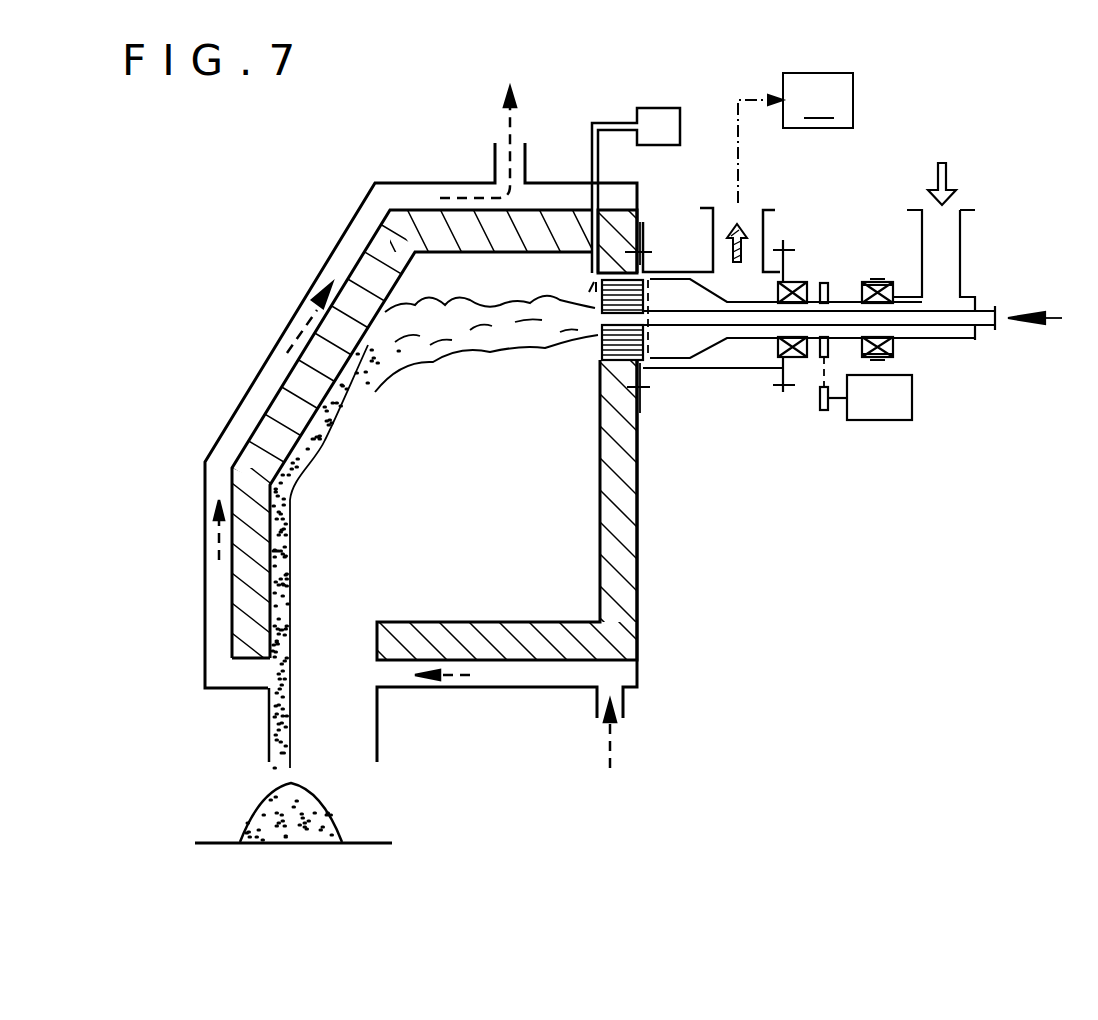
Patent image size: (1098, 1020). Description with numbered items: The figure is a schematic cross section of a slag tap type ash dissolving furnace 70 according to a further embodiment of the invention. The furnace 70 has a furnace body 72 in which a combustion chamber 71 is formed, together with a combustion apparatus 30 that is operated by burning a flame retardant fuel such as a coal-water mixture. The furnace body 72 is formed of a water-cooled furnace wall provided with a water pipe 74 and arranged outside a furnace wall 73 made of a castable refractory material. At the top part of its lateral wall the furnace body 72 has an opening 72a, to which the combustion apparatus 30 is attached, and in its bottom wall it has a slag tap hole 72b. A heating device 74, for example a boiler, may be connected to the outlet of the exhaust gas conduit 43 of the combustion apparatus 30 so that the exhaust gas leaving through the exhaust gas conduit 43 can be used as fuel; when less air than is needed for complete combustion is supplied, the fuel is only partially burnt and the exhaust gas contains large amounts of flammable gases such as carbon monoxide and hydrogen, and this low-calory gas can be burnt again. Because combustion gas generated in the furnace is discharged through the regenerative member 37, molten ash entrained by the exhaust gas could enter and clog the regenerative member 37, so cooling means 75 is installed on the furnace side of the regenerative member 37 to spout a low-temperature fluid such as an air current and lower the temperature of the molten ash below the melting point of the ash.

The combustion apparatus 30 is at (985, 110).
The regenerative member 37 is at (600, 340).
The exhaust gas conduit 43 is at (742, 210).
The slag tap type ash dissolving furnace 70 is at (238, 155).
The combustion chamber 71 is at (446, 487).
The furnace body 72 is at (258, 320).
The opening 72a is at (602, 350).
The slag tap hole 72b is at (376, 636).
The furnace wall 73 is at (328, 420).
The water pipe 74 is at (207, 508).
The cooling means 75 is at (590, 118).